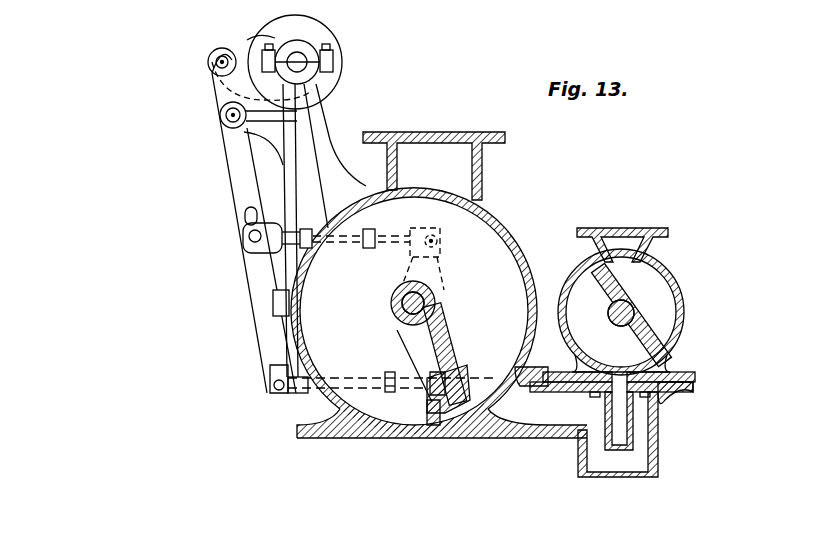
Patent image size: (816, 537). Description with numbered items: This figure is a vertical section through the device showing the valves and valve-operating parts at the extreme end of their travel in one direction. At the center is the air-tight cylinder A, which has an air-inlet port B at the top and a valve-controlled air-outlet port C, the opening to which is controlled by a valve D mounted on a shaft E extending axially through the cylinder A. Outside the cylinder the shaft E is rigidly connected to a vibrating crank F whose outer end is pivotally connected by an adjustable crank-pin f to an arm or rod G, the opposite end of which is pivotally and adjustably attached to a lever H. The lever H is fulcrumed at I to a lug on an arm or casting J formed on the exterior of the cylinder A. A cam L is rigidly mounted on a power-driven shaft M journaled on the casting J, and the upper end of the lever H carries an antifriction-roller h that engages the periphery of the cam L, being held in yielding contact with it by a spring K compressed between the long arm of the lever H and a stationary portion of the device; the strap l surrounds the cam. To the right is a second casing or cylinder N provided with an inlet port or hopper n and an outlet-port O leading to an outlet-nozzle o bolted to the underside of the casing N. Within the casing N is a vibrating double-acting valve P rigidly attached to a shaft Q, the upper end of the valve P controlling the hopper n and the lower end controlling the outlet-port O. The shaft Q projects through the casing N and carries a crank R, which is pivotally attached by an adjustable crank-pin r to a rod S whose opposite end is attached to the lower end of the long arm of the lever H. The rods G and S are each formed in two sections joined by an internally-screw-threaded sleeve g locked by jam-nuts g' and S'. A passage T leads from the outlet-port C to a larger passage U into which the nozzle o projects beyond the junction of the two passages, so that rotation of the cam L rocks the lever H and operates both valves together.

The air-tight cylinder A is at (498, 218).
The air-inlet port B is at (428, 148).
The air-outlet port C is at (492, 392).
The valve D is at (452, 344).
The shaft E is at (436, 300).
The vibrating crank F is at (440, 266).
The adjustable crank-pin f is at (437, 240).
The arm or rod G is at (392, 236).
The internally-screw-threaded sleeve g is at (321, 257).
The jam-nut g' is at (366, 257).
The lever H is at (233, 185).
The antifriction-roller h is at (214, 56).
The fulcrum I is at (220, 116).
The arm or casting J is at (262, 137).
The spring K is at (272, 306).
The cam L is at (303, 40).
The eccentric strap l is at (250, 40).
The shaft M is at (312, 60).
The second casing or cylinder N is at (678, 300).
The inlet port or hopper n is at (622, 242).
The outlet-port O is at (615, 378).
The outlet-nozzle o is at (622, 430).
The vibrating double-acting valve P is at (615, 295).
The shaft Q is at (630, 312).
The crank R is at (672, 370).
The adjustable crank-pin r is at (684, 376).
The rod S is at (390, 366).
The jam-nut S' is at (404, 369).
The passage T is at (550, 428).
The passage U is at (628, 465).